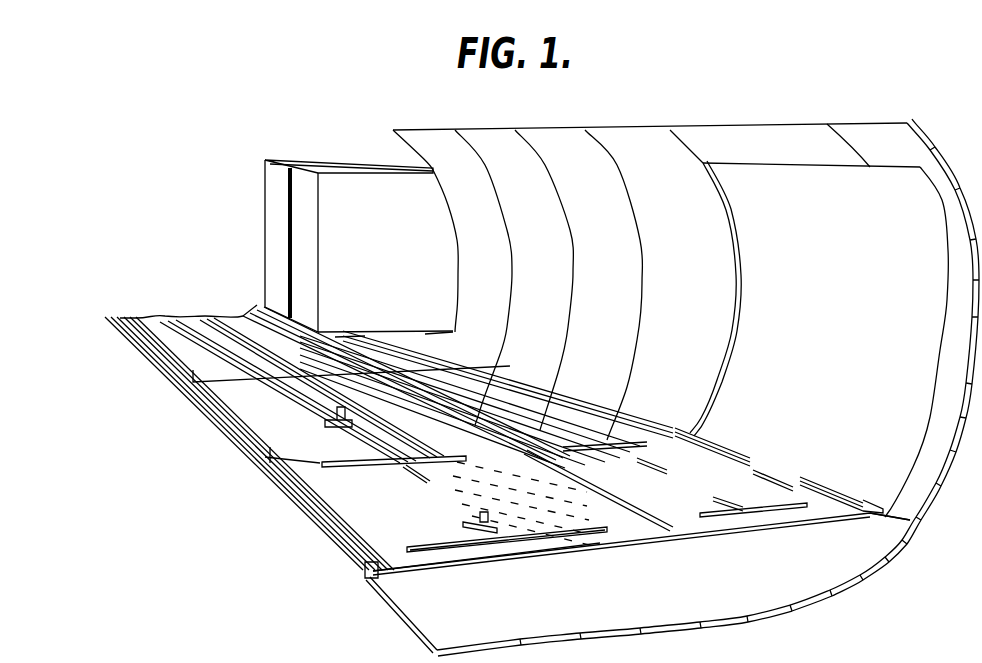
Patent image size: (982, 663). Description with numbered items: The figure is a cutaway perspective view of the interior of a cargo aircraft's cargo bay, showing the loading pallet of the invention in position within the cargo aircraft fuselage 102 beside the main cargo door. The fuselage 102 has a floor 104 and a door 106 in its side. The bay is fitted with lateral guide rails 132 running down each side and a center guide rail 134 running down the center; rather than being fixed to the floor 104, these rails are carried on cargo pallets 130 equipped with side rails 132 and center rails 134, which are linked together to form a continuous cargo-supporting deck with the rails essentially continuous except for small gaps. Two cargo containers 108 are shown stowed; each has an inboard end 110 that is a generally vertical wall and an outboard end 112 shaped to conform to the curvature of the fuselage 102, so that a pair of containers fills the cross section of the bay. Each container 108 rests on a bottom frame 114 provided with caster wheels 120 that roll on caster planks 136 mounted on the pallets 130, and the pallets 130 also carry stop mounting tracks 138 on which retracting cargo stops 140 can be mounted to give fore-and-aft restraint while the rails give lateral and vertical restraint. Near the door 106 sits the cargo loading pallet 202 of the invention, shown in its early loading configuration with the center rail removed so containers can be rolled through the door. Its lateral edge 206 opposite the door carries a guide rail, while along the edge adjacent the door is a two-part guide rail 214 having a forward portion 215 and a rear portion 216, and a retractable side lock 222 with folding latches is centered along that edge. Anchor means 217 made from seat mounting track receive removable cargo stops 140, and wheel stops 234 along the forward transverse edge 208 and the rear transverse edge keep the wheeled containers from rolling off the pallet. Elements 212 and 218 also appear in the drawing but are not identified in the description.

The cargo aircraft fuselage 102 is at (724, 122).
The floor 104 is at (417, 630).
The door 106 is at (728, 331).
The cargo container 108 is at (307, 172).
The inboard end 110 is at (269, 196).
The outboard end 112 is at (447, 203).
The bottom frame 114 is at (434, 331).
The caster wheels 120 is at (346, 335).
The cargo pallets 130 is at (198, 345).
The lateral guide rail 132 is at (122, 311).
The center guide rail 134 is at (257, 304).
The caster planks 136 is at (158, 322).
The stop mounting tracks 138 is at (200, 321).
The retracting cargo stop 140 is at (453, 527).
The cargo loading pallet 202 is at (293, 505).
The lateral edge opposite the door 206 is at (347, 560).
The forward transverse edge 208 is at (440, 563).
The corner bracket 212 is at (373, 583).
The two-part guide rail 214 is at (865, 523).
The forward portion 215 is at (862, 503).
The rear portion 216 is at (720, 443).
The anchor means 217 is at (466, 520).
The floor strip 218 is at (617, 531).
The retractable side lock 222 is at (767, 470).
The wheel stop 234 is at (337, 468).